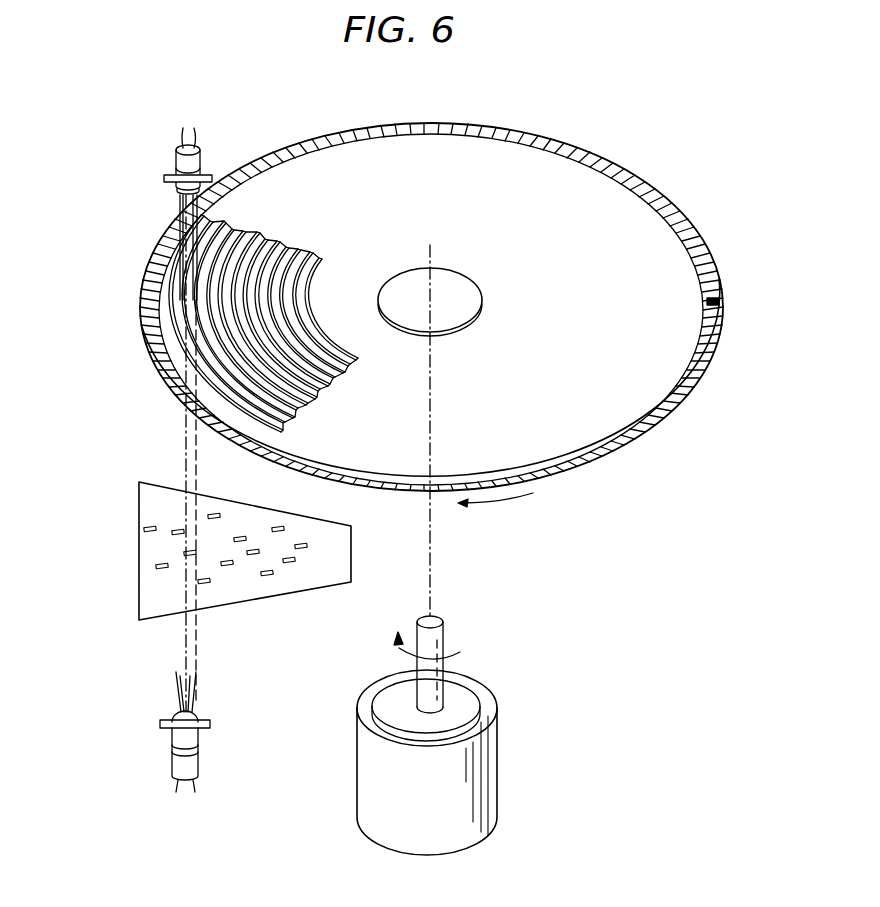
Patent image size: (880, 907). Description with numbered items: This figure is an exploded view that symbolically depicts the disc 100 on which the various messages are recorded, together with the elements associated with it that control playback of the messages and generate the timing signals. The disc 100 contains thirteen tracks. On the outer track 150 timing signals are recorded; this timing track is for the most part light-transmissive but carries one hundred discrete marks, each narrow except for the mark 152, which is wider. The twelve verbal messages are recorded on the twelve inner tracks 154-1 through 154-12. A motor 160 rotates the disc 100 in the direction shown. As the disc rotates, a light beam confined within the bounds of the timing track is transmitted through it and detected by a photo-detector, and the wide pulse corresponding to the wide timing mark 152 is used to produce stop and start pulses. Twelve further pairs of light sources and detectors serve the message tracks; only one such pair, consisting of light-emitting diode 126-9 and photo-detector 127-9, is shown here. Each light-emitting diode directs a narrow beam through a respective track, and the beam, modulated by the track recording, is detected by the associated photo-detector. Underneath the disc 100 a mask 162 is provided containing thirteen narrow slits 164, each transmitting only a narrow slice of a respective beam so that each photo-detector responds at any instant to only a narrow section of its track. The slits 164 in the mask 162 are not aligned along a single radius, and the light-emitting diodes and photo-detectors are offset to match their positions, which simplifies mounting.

The disc 100 is at (557, 129).
The outer track 150 is at (645, 196).
The wide timing mark 152 is at (720, 301).
The inner track 154-1 is at (166, 306).
The inner track 154-12 is at (298, 307).
The light-emitting diode 126-9 is at (217, 131).
The photo-detector 127-9 is at (200, 745).
The motor 160 is at (497, 790).
The mask 162 is at (337, 568).
The slits 164 is at (308, 546).